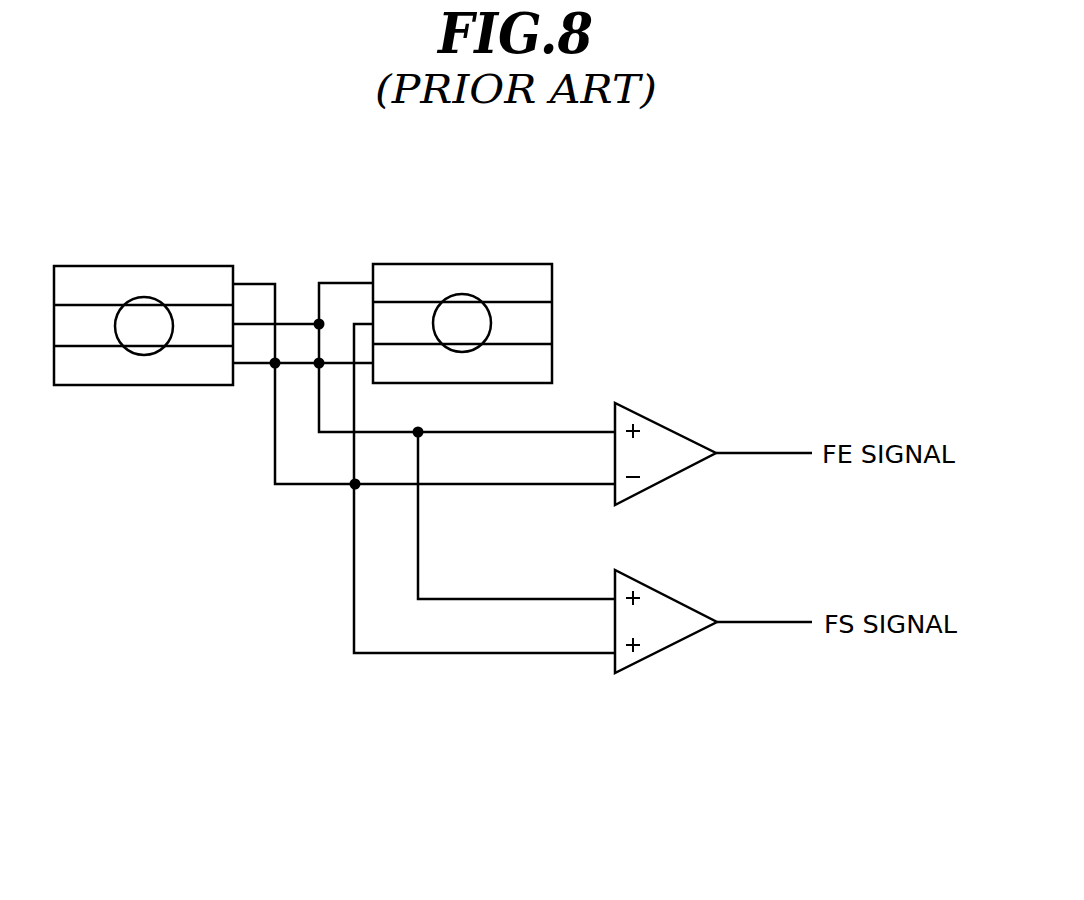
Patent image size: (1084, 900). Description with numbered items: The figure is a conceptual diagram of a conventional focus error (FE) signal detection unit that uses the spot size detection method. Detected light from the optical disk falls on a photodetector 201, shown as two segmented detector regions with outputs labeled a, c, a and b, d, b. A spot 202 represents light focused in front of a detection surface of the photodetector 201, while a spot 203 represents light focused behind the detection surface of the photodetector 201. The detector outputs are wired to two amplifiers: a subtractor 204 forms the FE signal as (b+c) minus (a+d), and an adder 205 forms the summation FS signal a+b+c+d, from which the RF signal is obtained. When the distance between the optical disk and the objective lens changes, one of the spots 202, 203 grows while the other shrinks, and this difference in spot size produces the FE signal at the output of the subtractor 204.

The photodetector 201 is at (387, 263).
The spot 202 is at (114, 330).
The spot 203 is at (492, 316).
The subtractor 204 is at (673, 432).
The adder 205 is at (673, 600).